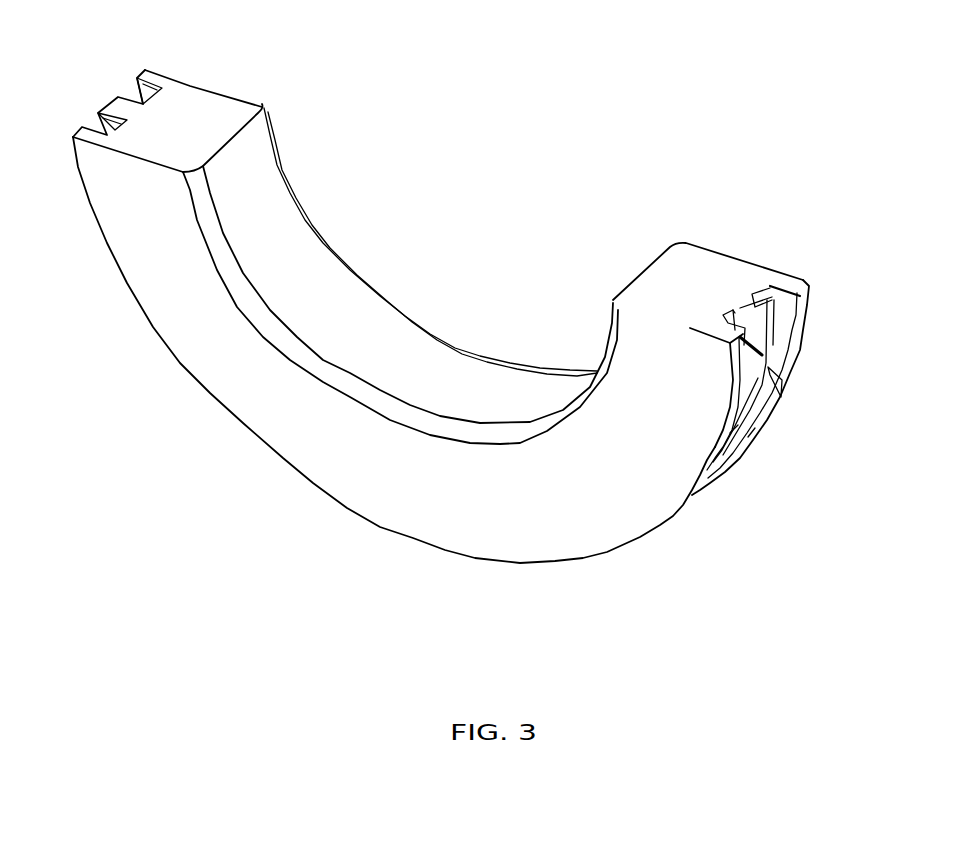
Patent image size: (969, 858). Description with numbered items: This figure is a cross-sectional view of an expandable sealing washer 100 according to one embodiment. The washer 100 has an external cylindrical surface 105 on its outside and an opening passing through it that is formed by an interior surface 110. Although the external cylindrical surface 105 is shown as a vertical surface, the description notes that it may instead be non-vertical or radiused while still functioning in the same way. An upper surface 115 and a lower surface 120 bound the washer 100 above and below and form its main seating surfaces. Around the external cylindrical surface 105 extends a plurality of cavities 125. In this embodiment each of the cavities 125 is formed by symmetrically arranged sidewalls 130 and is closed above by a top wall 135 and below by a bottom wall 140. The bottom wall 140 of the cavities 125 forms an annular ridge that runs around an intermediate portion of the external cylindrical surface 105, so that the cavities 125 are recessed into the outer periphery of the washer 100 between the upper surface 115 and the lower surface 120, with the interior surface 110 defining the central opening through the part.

The washer 100 is at (722, 651).
The external cylindrical surface 105 is at (141, 72).
The interior surface 110 is at (467, 366).
The upper surface 115 is at (114, 182).
The lower surface 120 is at (214, 84).
The cavities 125 is at (735, 312).
The sidewalls 130 is at (740, 398).
The top wall 135 is at (805, 312).
The bottom wall 140 is at (768, 324).